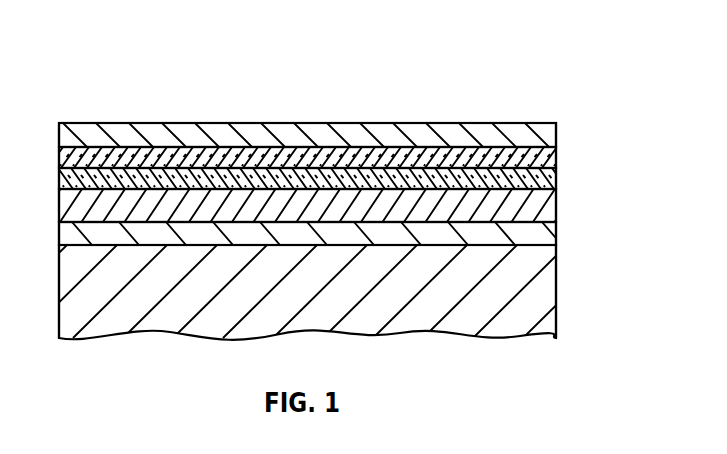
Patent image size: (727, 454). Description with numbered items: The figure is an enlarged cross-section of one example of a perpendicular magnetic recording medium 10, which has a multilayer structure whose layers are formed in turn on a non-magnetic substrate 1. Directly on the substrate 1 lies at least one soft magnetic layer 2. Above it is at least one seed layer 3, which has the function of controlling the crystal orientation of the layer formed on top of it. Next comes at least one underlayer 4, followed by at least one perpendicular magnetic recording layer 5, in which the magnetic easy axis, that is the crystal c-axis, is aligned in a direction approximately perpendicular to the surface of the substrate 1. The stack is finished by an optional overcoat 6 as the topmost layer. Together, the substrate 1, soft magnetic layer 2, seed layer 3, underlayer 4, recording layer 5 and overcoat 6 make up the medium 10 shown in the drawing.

The magnetic recording medium 10 is at (325, 89).
The non-magnetic substrate 1 is at (542, 291).
The soft magnetic layer 2 is at (550, 234).
The seed layer 3 is at (548, 208).
The underlayer 4 is at (552, 178).
The perpendicular magnetic recording layer 5 is at (553, 165).
The overcoat 6 is at (557, 137).